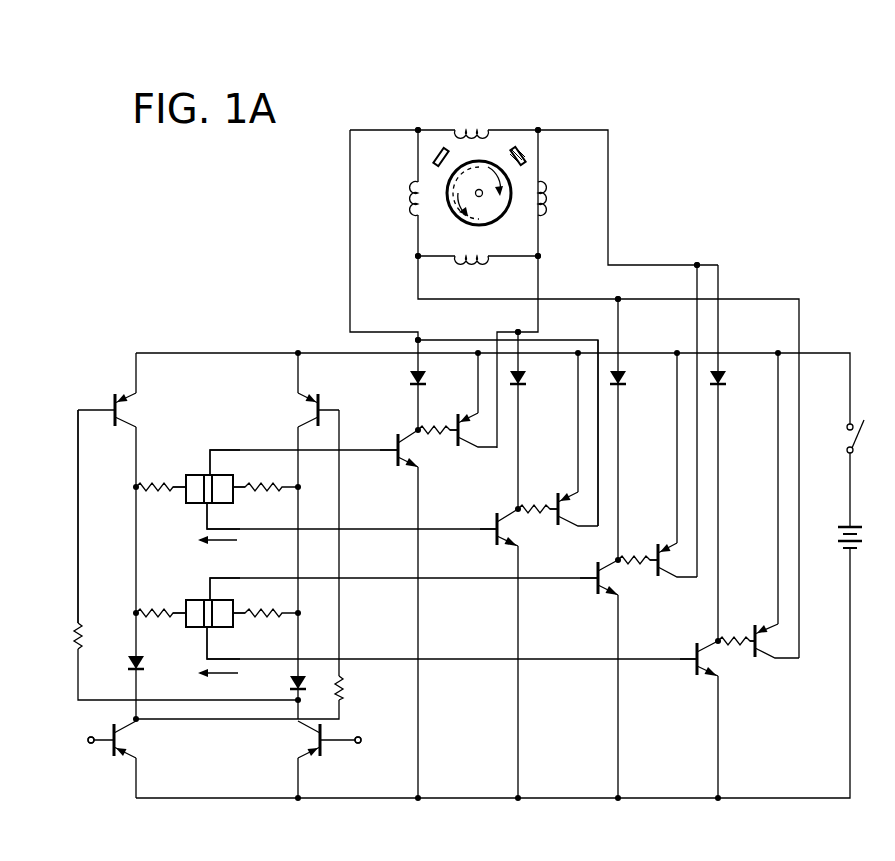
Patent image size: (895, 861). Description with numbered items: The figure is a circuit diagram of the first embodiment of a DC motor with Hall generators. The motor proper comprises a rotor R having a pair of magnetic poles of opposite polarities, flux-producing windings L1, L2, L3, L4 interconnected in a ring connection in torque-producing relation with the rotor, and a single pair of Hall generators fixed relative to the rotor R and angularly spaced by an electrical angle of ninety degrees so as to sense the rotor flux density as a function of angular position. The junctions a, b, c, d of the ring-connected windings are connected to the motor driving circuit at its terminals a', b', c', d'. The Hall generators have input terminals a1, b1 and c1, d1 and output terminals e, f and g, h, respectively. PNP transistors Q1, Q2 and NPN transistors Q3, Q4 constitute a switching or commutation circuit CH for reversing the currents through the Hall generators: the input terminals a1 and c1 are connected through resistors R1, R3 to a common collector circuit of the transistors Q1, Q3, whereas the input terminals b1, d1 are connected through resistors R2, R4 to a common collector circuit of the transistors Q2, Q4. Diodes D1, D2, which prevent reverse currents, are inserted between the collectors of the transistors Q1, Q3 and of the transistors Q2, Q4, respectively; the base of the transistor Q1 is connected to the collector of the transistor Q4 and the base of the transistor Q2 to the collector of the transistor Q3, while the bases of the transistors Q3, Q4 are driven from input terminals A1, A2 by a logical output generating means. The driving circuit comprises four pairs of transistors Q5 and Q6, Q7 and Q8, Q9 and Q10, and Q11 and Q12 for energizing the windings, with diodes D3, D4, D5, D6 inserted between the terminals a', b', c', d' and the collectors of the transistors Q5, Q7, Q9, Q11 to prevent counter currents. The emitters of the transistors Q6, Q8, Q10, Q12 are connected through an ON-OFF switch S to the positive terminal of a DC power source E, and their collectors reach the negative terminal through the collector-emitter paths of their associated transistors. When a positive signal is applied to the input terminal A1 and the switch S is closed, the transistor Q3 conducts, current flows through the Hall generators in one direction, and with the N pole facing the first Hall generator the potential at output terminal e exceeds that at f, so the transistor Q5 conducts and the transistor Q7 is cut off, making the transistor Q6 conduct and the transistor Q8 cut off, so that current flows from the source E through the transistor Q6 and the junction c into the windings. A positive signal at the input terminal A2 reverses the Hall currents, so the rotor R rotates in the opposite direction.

The brushless DC motor M is at (513, 126).
The rotor R is at (458, 222).
The flux-producing winding L1 is at (460, 128).
The flux-producing winding L2 is at (547, 198).
The flux-producing winding L3 is at (478, 262).
The flux-producing winding L4 is at (410, 196).
The junction a is at (418, 114).
The junction b is at (550, 115).
The junction c is at (555, 255).
The junction d is at (399, 255).
The terminal a' is at (432, 325).
The terminal b' is at (699, 241).
The terminal c' is at (491, 321).
The terminal d' is at (633, 287).
The diode D1 is at (128, 661).
The diode D2 is at (290, 684).
The diode D3 is at (426, 379).
The diode D4 is at (526, 379).
The diode D5 is at (626, 379).
The diode D6 is at (726, 379).
The resistor R1 is at (156, 494).
The resistor R2 is at (259, 483).
The resistor R3 is at (158, 621).
The resistor R4 is at (264, 621).
The input terminal a1 is at (178, 486).
The input terminal b1 is at (238, 490).
The input terminal c1 is at (178, 612).
The input terminal d1 is at (240, 628).
The output terminal e is at (216, 474).
The output terminal f is at (207, 505).
The output terminal g is at (216, 600).
The output terminal h is at (207, 629).
The PNP transistor Q1 is at (128, 409).
The PNP transistor Q2 is at (314, 408).
The NPN transistor Q3 is at (122, 742).
The NPN transistor Q4 is at (314, 742).
The transistor Q5 is at (410, 458).
The transistor Q6 is at (463, 452).
The transistor Q7 is at (505, 545).
The transistor Q8 is at (563, 530).
The transistor Q9 is at (614, 590).
The transistor Q10 is at (666, 580).
The transistor Q11 is at (710, 670).
The transistor Q12 is at (760, 662).
The ON-OFF switch S is at (846, 442).
The DC power source E is at (838, 536).
The switching or commutation circuit CH is at (93, 472).
The input terminal A1 is at (86, 756).
The input terminal A2 is at (366, 757).